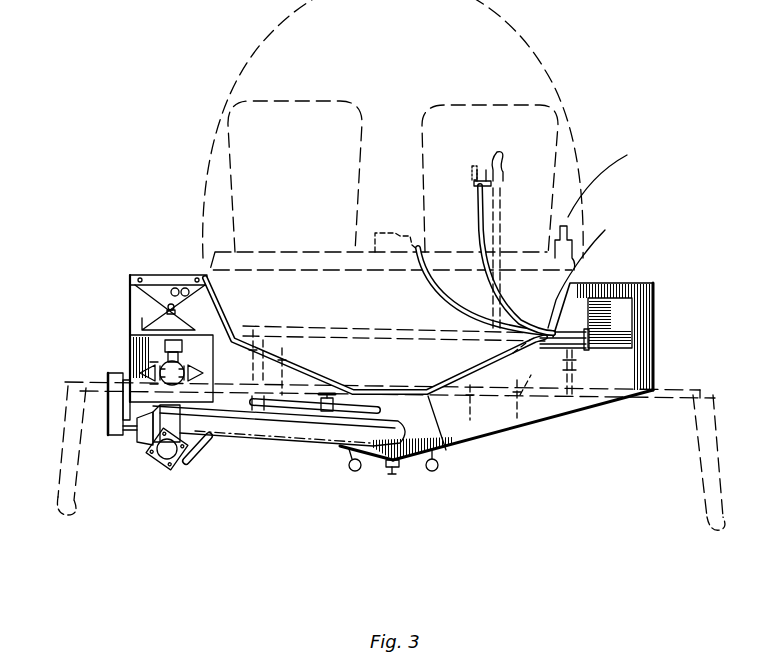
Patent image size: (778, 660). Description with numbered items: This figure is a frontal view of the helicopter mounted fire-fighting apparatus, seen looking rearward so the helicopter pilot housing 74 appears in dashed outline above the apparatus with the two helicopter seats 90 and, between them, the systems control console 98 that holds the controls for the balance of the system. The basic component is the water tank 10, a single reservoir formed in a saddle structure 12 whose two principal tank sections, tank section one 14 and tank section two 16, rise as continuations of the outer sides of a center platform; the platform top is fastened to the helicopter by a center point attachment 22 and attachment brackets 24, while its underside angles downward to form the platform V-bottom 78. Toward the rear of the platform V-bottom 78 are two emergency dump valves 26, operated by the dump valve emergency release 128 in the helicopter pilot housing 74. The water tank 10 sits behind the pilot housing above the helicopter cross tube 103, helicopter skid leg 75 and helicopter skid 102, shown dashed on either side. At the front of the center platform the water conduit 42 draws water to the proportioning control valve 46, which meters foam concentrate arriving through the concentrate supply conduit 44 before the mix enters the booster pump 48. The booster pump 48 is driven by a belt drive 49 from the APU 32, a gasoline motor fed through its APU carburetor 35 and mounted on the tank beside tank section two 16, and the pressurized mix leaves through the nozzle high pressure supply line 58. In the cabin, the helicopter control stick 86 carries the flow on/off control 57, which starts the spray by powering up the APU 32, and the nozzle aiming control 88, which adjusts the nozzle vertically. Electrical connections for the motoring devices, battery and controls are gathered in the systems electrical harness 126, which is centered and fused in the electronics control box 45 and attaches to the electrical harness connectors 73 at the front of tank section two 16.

The water tank 10 is at (131, 275).
The saddle structure 12 is at (607, 402).
The tank section one 14 is at (655, 305).
The tank section two 16 is at (128, 300).
The center point attachment 22 is at (392, 476).
The attachment brackets 24 is at (589, 271).
The emergency dump valves 26 is at (352, 472).
The APU 32 is at (145, 358).
The APU carburetor 35 is at (168, 368).
The water conduit 42 is at (257, 420).
The concentrate supply conduit 44 is at (196, 464).
The electronics control box 45 is at (617, 308).
The proportioning control valve 46 is at (322, 410).
The booster pump 48 is at (145, 428).
The belt drive 49 is at (120, 433).
The flow on/off control 57 is at (472, 168).
The nozzle high pressure supply line 58 is at (162, 462).
The electrical harness connectors 73 is at (183, 288).
The helicopter pilot housing 74 is at (254, 52).
The helicopter skid leg 75 is at (72, 400).
The platform V-bottom 78 is at (500, 437).
The helicopter control stick 86 is at (497, 234).
The nozzle aiming control 88 is at (482, 179).
The helicopter seats 90 is at (302, 108).
The systems control console 98 is at (386, 231).
The helicopter skid 102 is at (68, 516).
The helicopter cross tube 103 is at (289, 392).
The systems electrical harness 126 is at (490, 262).
The dump valve emergency release 128 is at (615, 178).